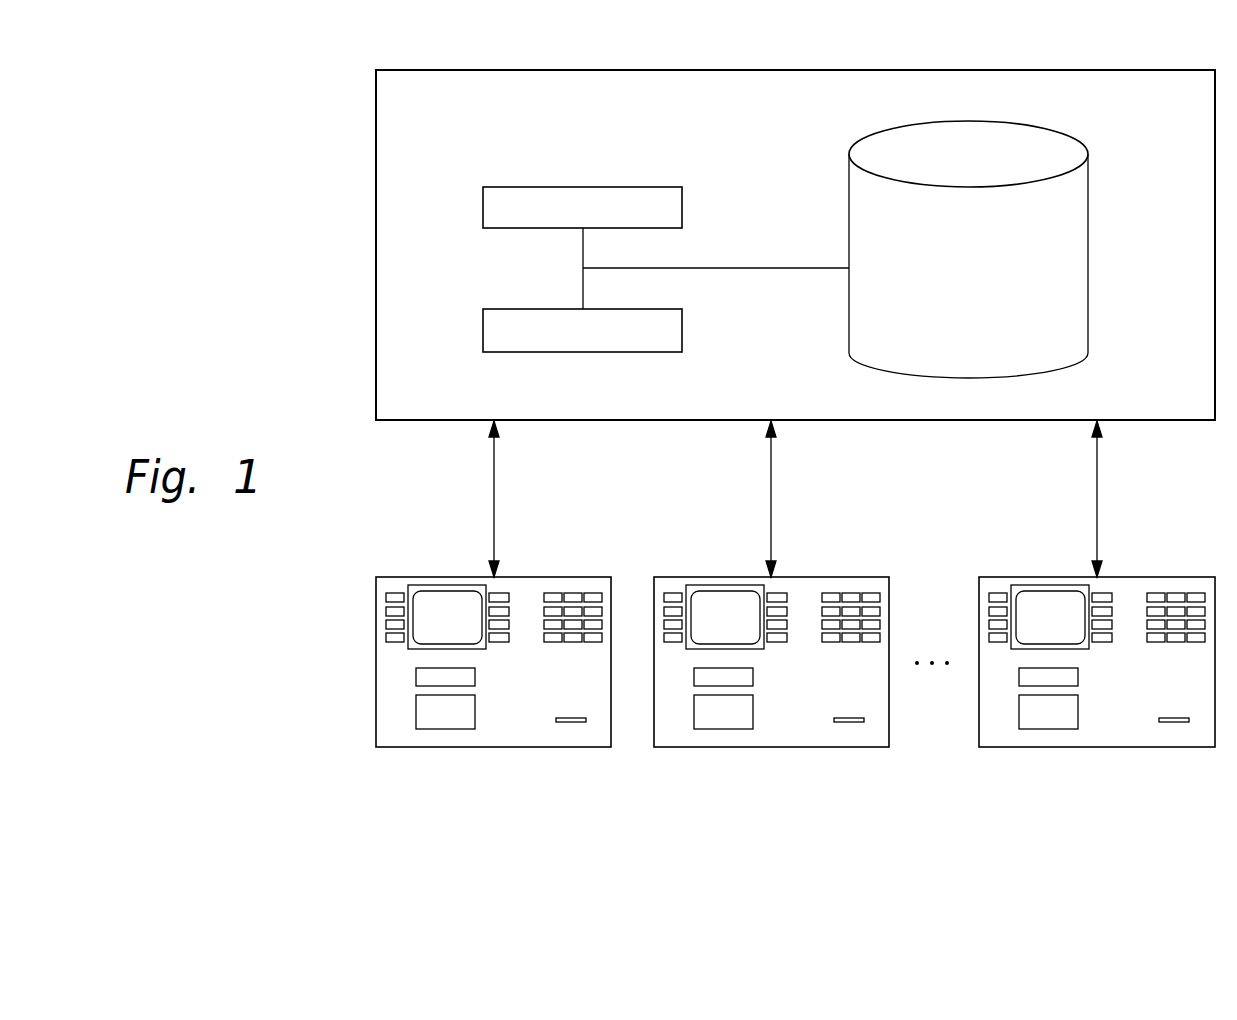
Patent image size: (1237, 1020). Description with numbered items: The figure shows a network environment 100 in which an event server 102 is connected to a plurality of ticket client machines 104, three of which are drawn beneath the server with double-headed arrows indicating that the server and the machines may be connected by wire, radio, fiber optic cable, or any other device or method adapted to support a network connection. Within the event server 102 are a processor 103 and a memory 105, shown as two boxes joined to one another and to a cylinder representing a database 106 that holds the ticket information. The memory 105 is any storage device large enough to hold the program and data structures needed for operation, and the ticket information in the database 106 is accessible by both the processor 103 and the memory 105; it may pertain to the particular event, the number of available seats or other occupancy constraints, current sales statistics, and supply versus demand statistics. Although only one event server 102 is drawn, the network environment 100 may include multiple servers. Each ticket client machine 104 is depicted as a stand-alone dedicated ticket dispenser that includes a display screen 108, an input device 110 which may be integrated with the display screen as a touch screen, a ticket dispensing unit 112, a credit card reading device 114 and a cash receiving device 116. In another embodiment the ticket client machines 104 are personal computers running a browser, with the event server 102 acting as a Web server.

The network environment 100 is at (188, 255).
The event server 102 is at (773, 70).
The processor 103 is at (483, 206).
The ticket client machine 104 is at (543, 752).
The memory 105 is at (483, 328).
The database 106 is at (1078, 238).
The display screen 108 is at (447, 607).
The input device 110 is at (568, 605).
The ticket dispensing unit 112 is at (457, 713).
The credit card reading device 114 is at (563, 718).
The cash receiving device 116 is at (457, 680).